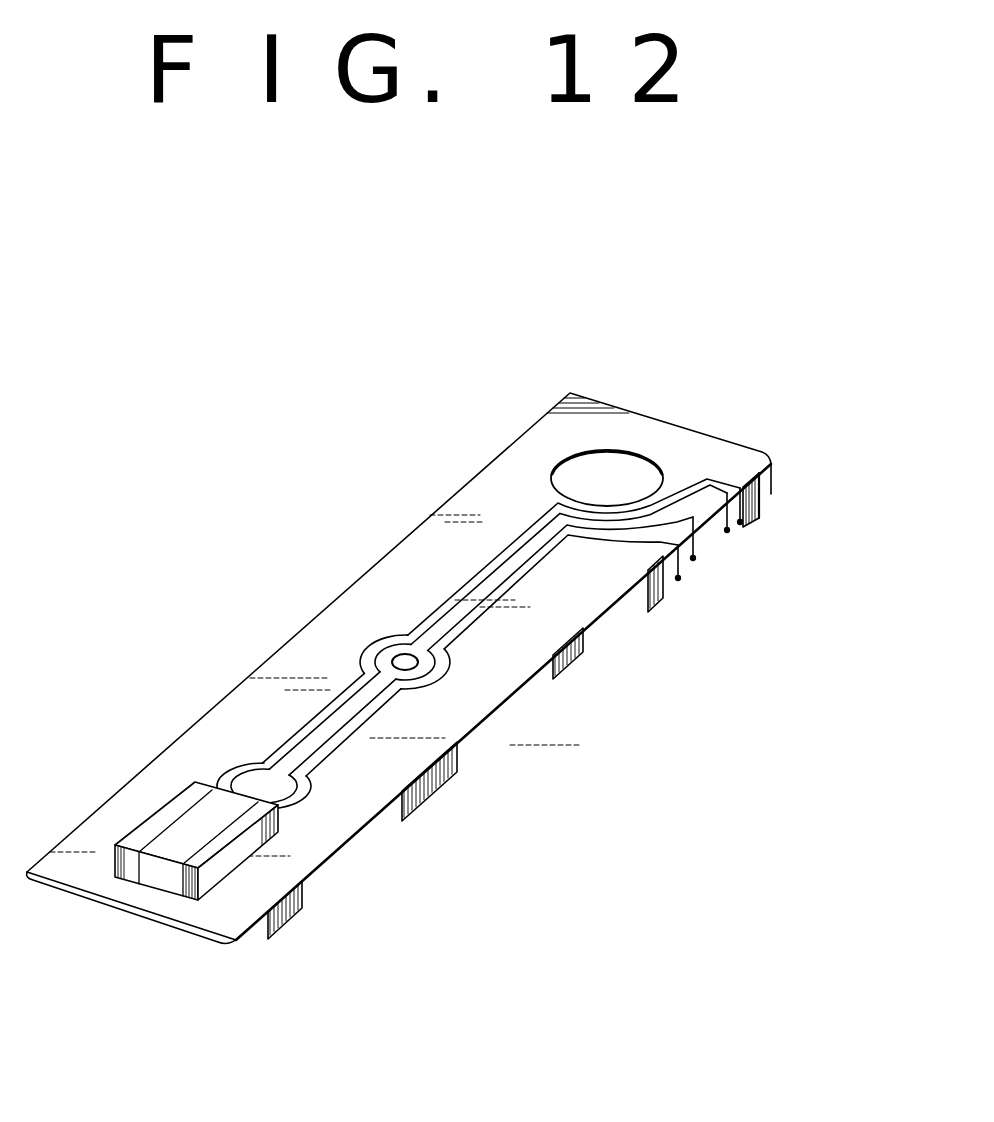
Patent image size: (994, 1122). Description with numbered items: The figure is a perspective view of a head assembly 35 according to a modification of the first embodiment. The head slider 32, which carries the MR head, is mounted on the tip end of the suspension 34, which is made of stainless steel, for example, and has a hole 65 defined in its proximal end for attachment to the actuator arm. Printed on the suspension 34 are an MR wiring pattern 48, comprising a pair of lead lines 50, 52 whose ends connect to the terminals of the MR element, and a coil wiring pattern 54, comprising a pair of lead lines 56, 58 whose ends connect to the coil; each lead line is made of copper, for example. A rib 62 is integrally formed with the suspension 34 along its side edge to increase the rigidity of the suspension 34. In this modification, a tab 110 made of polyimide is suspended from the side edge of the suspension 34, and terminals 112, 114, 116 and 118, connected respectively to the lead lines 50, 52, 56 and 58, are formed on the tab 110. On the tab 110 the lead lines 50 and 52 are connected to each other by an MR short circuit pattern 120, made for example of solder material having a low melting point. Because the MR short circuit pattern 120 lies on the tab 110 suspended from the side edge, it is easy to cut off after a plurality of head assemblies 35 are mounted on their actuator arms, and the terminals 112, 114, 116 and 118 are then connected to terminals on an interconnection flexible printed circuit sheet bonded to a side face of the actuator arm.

The head slider 32 is at (177, 835).
The suspension 34 is at (447, 494).
The head assembly 35 is at (462, 466).
The MR wiring pattern 48 is at (346, 742).
The lead line 50 is at (482, 608).
The lead line 52 is at (534, 570).
The coil wiring pattern 54 is at (314, 716).
The lead line 56 is at (468, 585).
The lead line 58 is at (437, 611).
The rib 62 is at (310, 893).
The hole 65 is at (578, 455).
The tab 110 is at (757, 494).
The terminal 112 is at (697, 552).
The terminal 114 is at (657, 604).
The terminal 116 is at (762, 523).
The terminal 118 is at (729, 532).
The MR short circuit pattern 120 is at (682, 576).